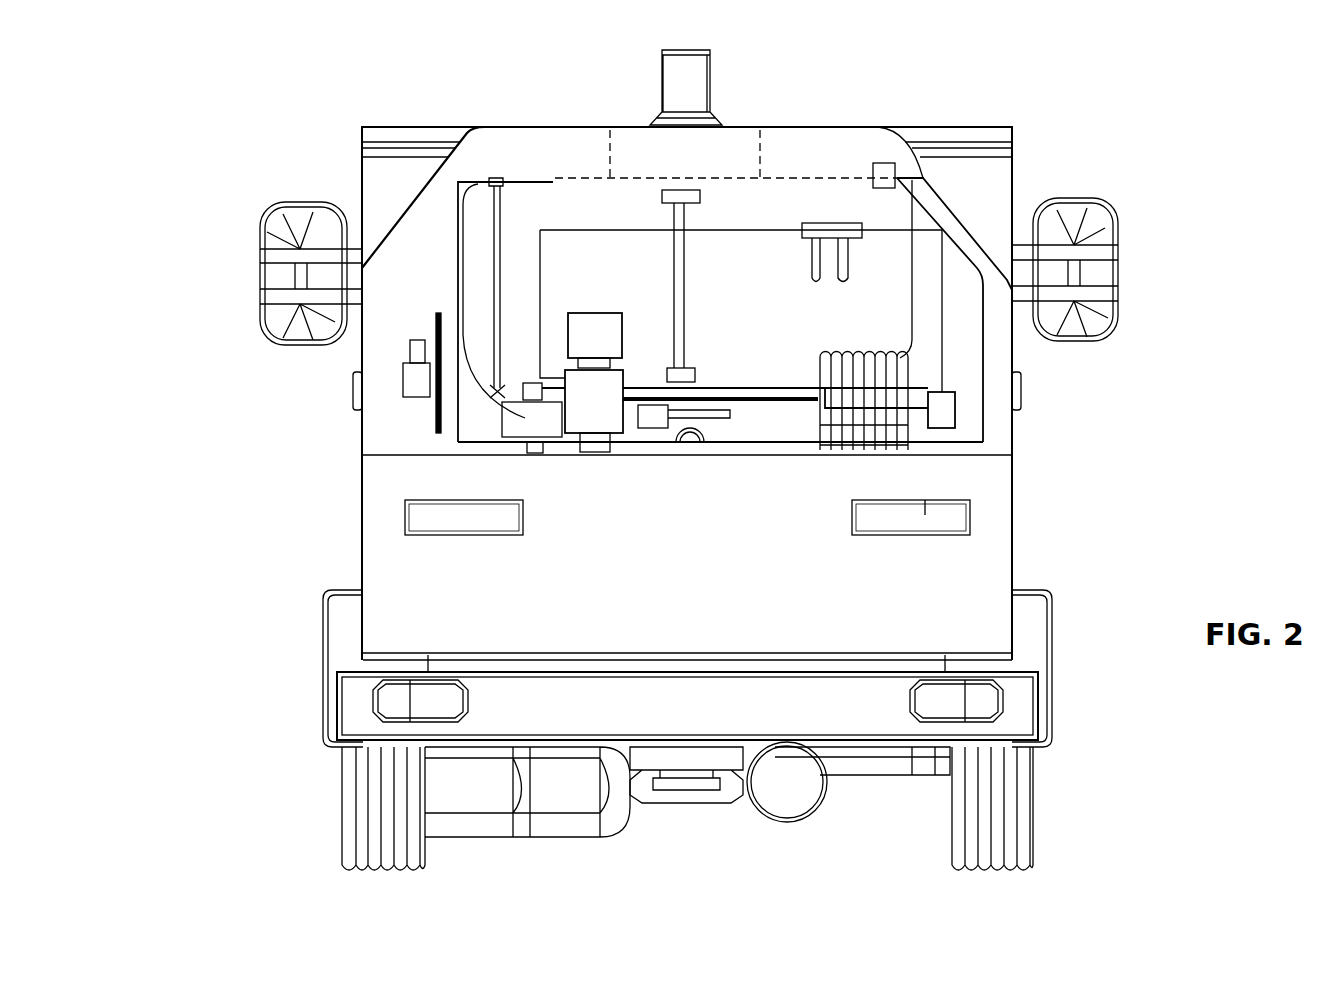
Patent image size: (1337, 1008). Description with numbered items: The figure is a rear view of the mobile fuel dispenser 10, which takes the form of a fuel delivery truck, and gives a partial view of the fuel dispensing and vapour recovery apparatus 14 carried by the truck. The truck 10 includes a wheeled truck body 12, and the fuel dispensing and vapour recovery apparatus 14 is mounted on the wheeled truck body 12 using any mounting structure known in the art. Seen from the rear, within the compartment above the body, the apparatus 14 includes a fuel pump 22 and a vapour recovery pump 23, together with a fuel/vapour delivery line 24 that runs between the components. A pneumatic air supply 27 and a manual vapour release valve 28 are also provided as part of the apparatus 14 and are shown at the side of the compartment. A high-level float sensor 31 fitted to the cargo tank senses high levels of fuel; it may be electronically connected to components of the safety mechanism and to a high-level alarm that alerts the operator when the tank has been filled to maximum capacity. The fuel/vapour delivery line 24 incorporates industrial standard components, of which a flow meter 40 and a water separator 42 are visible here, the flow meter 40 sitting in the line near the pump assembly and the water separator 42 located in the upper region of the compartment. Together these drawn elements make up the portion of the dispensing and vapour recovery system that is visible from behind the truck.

The mobile fuel dispenser 10 is at (186, 333).
The wheeled truck body 12 is at (1018, 480).
The fuel dispensing and vapour recovery apparatus 14 is at (783, 196).
The fuel pump 22 is at (946, 431).
The vapour recovery pump 23 is at (880, 176).
The fuel/vapour delivery line 24 is at (950, 337).
The pneumatic air supply 27 is at (415, 382).
The manual vapour release valve 28 is at (436, 418).
The high-level float sensor 31 is at (679, 194).
The flow meter 40 is at (588, 332).
The water separator 42 is at (832, 232).